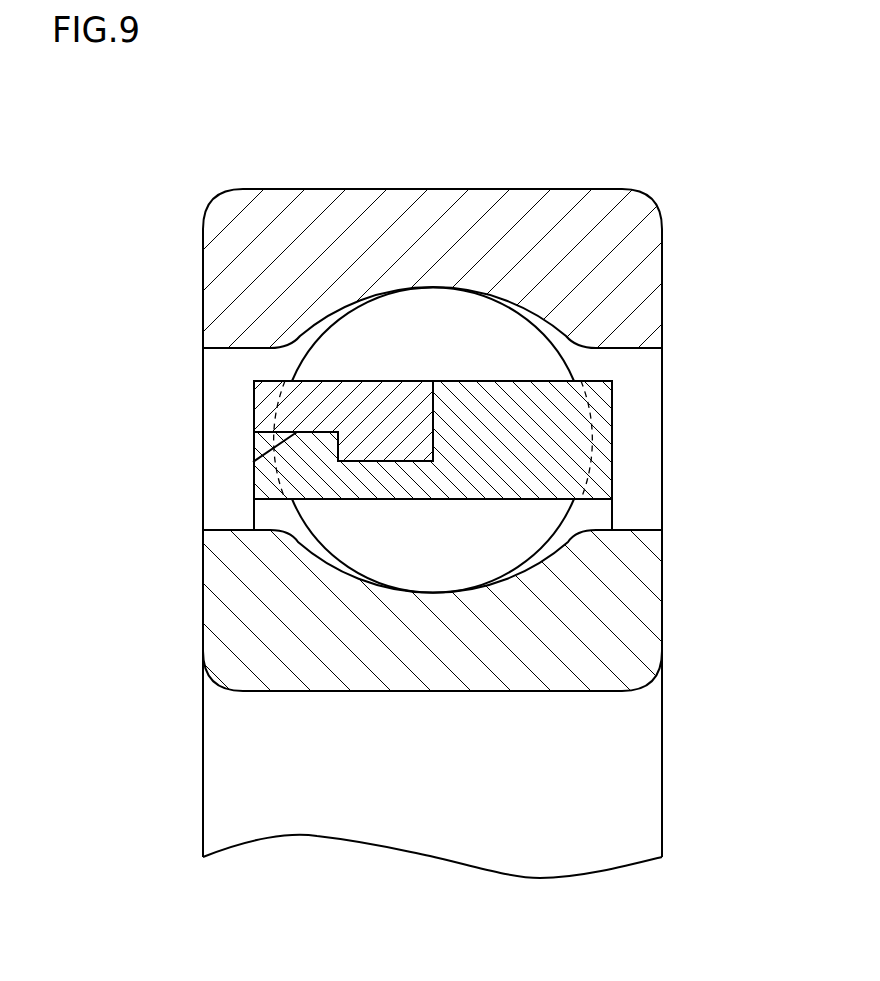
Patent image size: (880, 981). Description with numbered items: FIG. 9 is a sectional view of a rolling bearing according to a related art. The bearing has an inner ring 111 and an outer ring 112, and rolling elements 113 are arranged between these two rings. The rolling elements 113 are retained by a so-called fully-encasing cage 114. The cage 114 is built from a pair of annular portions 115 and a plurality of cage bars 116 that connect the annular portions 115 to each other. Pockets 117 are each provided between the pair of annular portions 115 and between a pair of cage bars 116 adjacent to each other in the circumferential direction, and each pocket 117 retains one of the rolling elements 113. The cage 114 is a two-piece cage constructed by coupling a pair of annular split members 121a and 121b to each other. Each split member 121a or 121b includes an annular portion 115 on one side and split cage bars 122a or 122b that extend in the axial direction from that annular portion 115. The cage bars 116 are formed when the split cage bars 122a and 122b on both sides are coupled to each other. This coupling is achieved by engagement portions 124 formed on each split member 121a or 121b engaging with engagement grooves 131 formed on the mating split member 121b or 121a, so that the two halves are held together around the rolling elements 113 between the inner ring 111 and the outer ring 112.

The inner ring 111 is at (287, 691).
The outer ring 112 is at (441, 189).
The rolling element 113 is at (392, 310).
The fully-encasing cage 114 is at (641, 418).
The annular portion 115 is at (263, 403).
The cage bar 116 is at (494, 364).
The pocket 117 is at (615, 483).
The split member 121a is at (256, 352).
The split member 121b is at (600, 354).
The split cage bar 122a is at (338, 390).
The split cage bar 122b is at (523, 390).
The engagement portion 124 is at (363, 500).
The engagement groove 131 is at (325, 451).